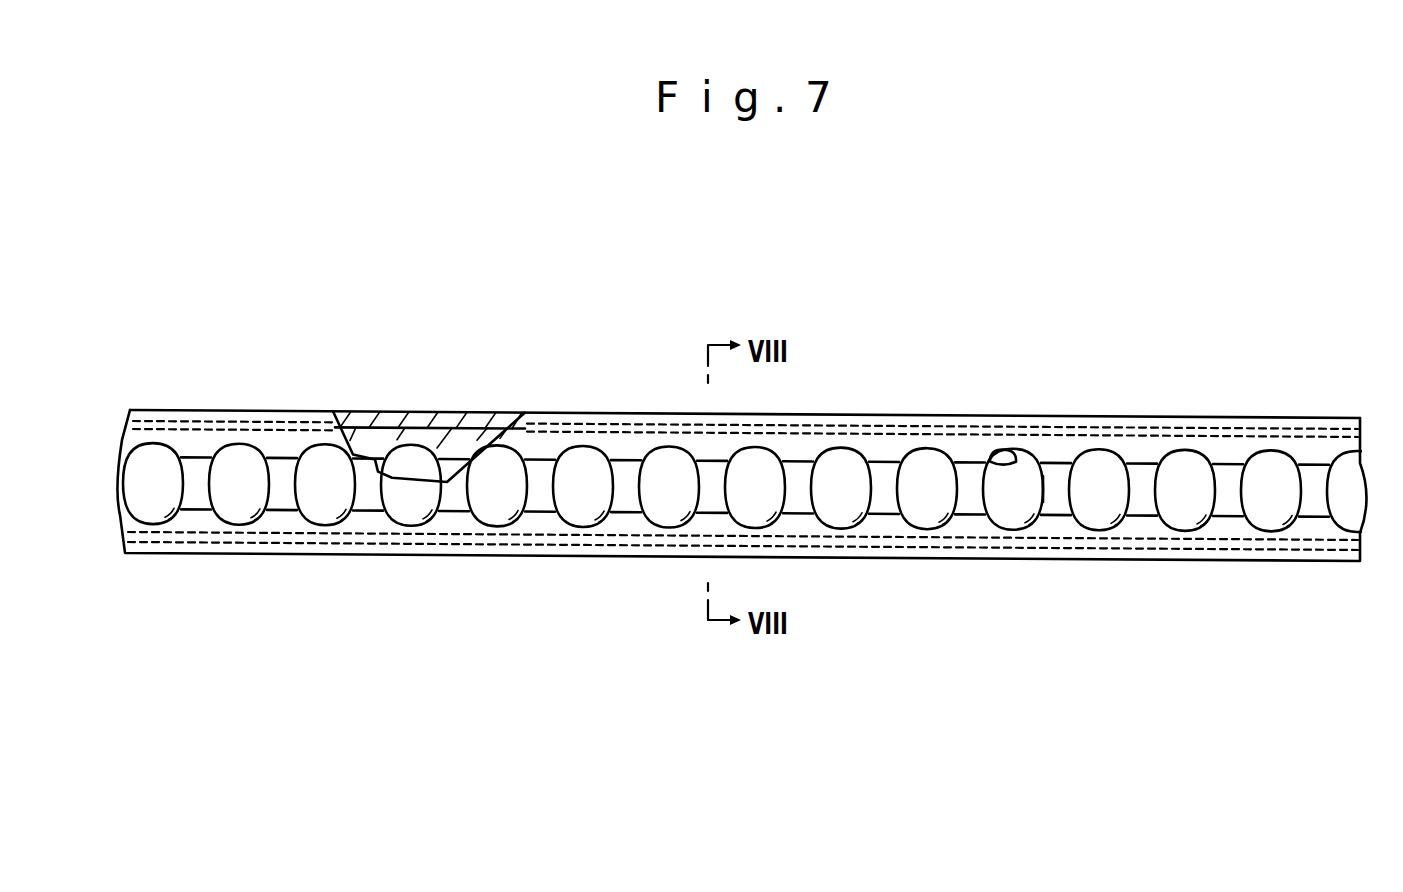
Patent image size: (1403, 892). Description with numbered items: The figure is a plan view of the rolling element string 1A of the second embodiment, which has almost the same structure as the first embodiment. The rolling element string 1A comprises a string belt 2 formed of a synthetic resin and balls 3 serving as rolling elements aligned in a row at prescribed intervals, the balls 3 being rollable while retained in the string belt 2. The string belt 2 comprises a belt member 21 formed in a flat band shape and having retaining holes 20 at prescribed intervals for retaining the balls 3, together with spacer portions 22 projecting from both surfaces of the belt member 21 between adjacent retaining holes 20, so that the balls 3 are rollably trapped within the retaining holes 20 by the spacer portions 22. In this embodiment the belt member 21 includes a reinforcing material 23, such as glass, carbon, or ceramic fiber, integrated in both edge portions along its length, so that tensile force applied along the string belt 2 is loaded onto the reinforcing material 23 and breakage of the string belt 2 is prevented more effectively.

The rolling element string 1A is at (1201, 402).
The string belt 2 is at (209, 405).
The balls 3 is at (917, 462).
The retaining holes 20 is at (1002, 447).
The belt member 21 is at (967, 530).
The spacer portions 22 is at (1048, 498).
The reinforcing material 23 is at (428, 412).